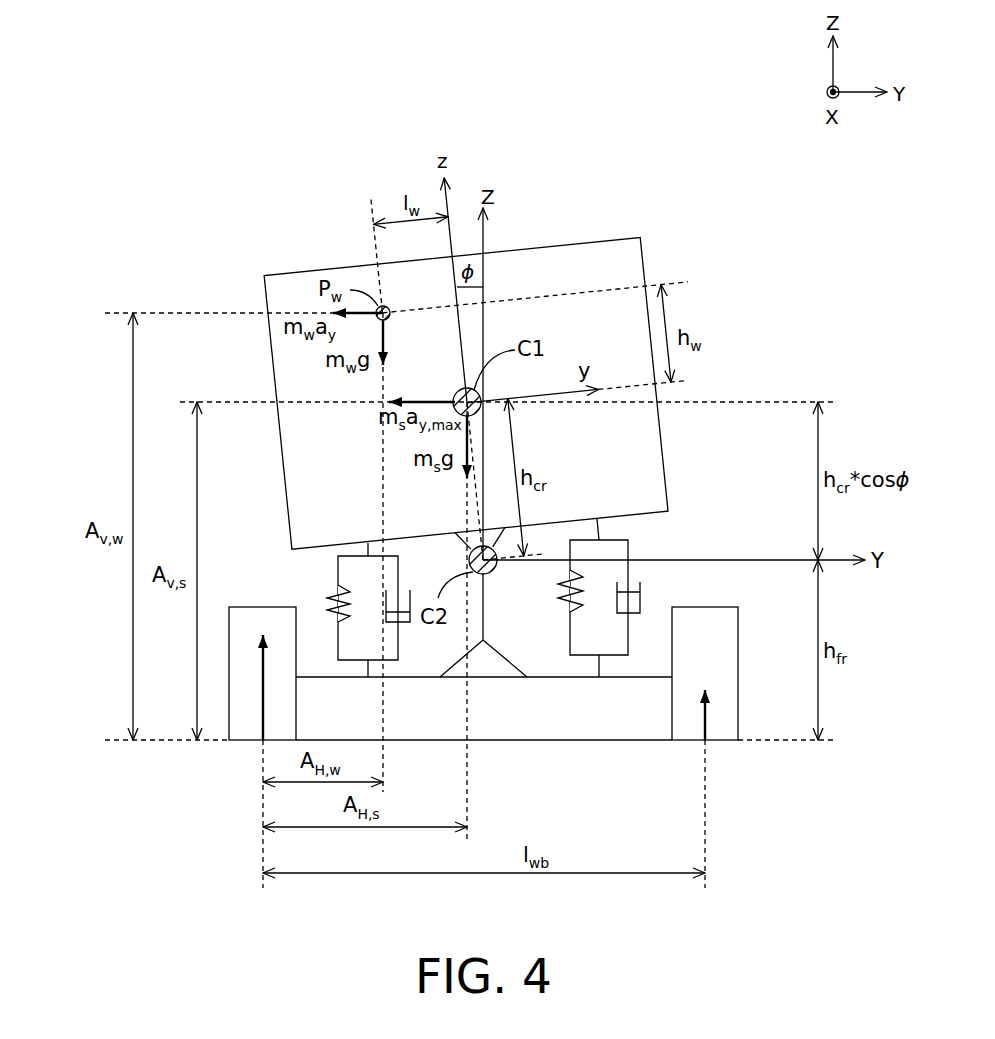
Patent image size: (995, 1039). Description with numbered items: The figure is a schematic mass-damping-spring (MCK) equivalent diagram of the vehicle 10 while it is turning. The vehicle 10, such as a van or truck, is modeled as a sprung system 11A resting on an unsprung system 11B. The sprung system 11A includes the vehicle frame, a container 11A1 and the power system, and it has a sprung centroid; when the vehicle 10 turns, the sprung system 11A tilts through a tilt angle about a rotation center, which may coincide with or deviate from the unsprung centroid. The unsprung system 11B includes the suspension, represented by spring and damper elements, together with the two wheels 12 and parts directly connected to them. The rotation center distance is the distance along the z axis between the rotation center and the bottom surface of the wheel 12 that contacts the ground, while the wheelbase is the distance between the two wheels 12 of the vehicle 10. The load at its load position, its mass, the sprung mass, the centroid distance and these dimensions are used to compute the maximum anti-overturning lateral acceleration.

The vehicle 10 is at (262, 162).
The sprung system 11A is at (613, 160).
The container 11A1 is at (592, 240).
The unsprung system 11B is at (683, 546).
The wheel 12 is at (262, 606).